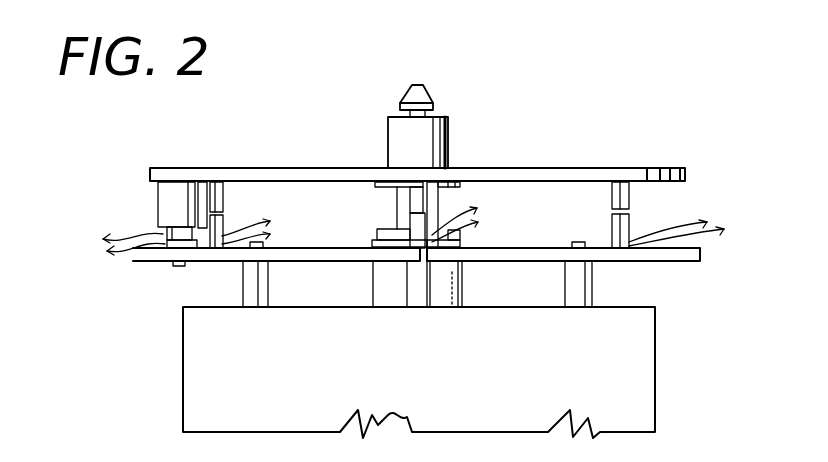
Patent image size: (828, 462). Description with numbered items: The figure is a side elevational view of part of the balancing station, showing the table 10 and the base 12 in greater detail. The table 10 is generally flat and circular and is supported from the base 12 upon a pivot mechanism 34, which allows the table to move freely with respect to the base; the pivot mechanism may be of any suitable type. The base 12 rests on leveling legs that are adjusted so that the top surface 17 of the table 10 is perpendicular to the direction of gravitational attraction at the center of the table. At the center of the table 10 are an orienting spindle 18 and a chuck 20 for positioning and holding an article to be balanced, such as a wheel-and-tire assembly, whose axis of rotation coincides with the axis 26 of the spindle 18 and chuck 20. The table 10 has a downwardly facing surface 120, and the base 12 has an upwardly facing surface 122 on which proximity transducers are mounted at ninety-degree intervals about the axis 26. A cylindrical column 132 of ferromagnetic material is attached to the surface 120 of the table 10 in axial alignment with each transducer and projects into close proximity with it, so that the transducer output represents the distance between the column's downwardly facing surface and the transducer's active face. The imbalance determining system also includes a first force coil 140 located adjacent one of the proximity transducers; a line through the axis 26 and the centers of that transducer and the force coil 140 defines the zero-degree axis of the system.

The table 10 is at (580, 167).
The base 12 is at (420, 389).
The top surface 17 is at (626, 167).
The orienting spindle 18 is at (466, 98).
The chuck 20 is at (427, 94).
The axis 26 is at (419, 83).
The pivot mechanism 34 is at (368, 217).
The downwardly facing surface 120 is at (507, 182).
The upwardly facing surface 122 is at (563, 246).
The cylindrical column 132 is at (629, 197).
The first force coil 140 is at (157, 204).